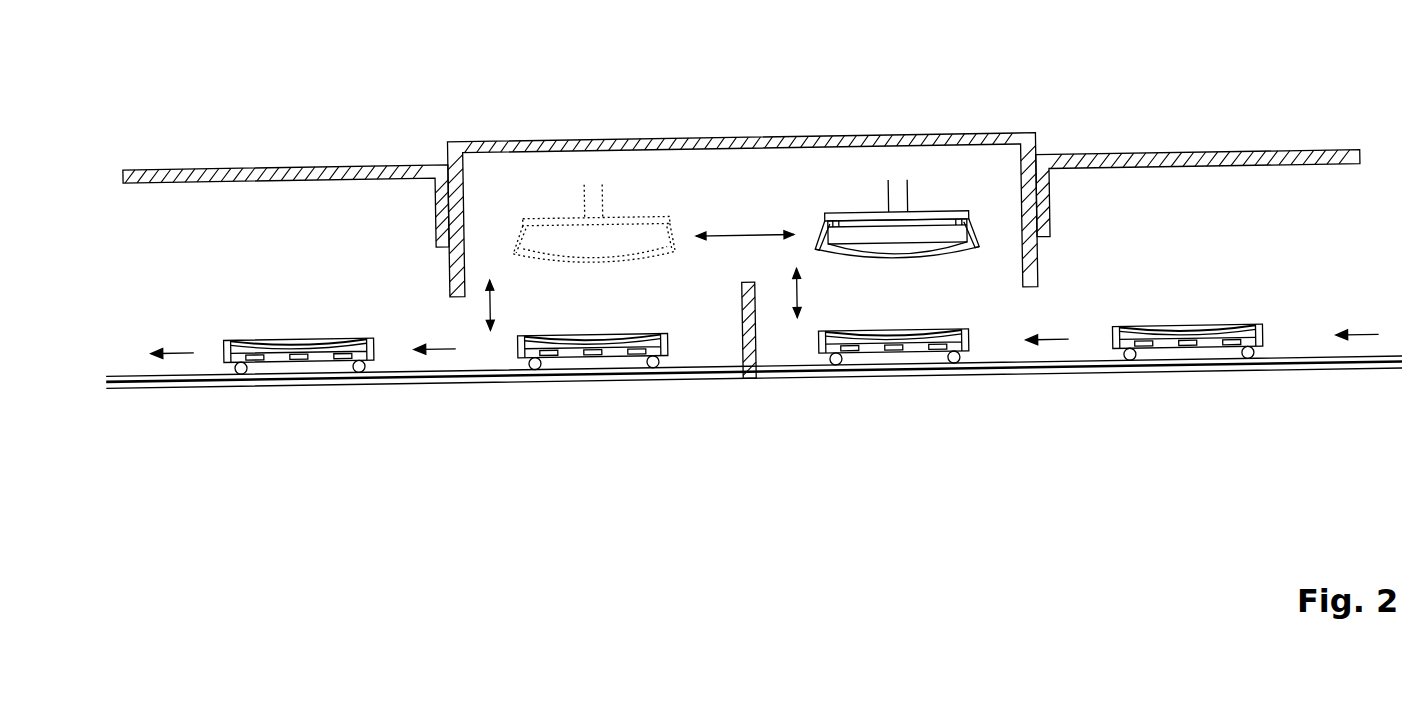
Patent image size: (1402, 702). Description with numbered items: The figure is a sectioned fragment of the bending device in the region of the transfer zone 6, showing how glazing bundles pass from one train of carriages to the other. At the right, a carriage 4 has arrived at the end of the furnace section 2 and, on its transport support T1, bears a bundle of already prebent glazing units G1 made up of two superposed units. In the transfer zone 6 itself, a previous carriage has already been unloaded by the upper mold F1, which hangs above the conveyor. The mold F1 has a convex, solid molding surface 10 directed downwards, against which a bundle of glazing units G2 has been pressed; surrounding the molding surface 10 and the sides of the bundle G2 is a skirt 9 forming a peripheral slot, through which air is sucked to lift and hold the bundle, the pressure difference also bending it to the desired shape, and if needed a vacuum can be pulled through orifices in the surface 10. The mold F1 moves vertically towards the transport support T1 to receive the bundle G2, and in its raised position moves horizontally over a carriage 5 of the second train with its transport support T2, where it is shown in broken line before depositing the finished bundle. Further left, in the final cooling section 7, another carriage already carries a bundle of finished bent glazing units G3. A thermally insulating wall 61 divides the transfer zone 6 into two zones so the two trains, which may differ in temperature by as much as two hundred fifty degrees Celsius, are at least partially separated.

The furnace section 2 is at (1243, 146).
The carriage 4 is at (1179, 355).
The carriage 5 is at (578, 378).
The transfer zone 6 is at (756, 119).
The final cooling section 7 is at (332, 142).
The skirt 9 is at (974, 234).
The molding surface 10 is at (829, 266).
The thermally insulating wall 61 is at (737, 367).
The upper mold F1 is at (935, 199).
The bundle of prebent glazing units G1 is at (1232, 333).
The bundle of glazing units G2 is at (971, 251).
The bundle of finished bent glazing units G3 is at (287, 333).
The transport support T1 is at (1265, 353).
The transport support T2 is at (498, 377).